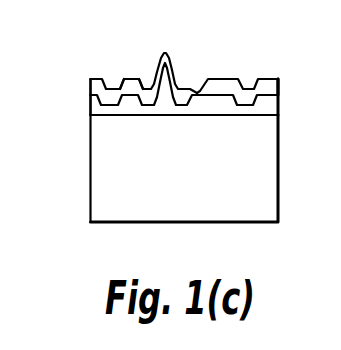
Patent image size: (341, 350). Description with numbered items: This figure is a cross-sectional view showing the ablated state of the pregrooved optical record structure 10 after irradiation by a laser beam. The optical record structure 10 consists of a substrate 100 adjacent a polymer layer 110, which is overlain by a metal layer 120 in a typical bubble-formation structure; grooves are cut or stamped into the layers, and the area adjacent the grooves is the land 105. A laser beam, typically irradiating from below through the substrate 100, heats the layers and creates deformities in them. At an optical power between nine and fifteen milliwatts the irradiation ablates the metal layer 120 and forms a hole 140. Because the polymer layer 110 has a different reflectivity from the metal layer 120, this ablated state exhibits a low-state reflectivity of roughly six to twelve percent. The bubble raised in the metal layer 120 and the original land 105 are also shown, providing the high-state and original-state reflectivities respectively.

The optical record structure 10 is at (75, 161).
The substrate 100 is at (200, 173).
The land 105 is at (127, 77).
The polymer layer 110 is at (90, 101).
The metal layer 120 is at (90, 91).
The hole 140 is at (200, 93).